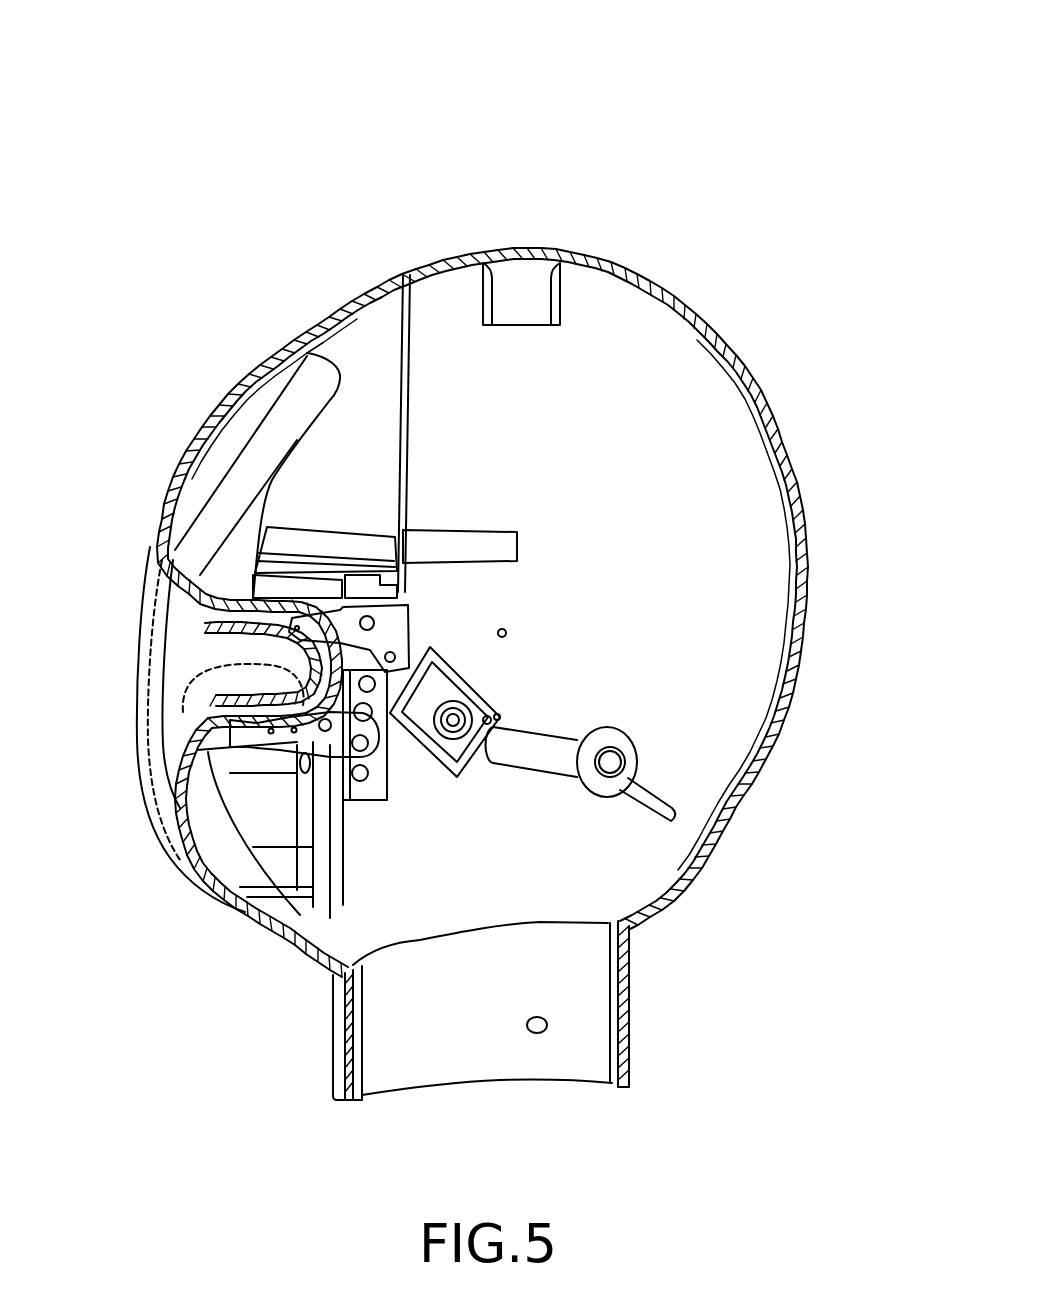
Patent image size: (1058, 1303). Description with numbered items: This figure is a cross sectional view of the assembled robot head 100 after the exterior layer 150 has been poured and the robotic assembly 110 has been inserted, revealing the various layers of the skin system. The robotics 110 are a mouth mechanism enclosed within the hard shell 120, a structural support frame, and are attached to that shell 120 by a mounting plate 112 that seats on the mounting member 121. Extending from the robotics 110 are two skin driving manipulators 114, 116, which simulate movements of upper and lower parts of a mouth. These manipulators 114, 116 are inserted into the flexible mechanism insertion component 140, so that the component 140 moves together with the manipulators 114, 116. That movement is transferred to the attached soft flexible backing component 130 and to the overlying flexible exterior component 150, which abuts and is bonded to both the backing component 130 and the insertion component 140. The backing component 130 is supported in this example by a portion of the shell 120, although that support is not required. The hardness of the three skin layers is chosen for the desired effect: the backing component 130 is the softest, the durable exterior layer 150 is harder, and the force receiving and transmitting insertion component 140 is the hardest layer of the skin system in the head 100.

The robot head 100 is at (703, 162).
The robotic assembly 110 is at (448, 818).
The mounting plate 112 is at (343, 803).
The manipulator 114 is at (274, 748).
The manipulator 116 is at (410, 608).
The hard shell 120 is at (613, 431).
The mounting member 121 is at (333, 904).
The backing component 130 is at (260, 428).
The mechanism insertion component 140 is at (204, 742).
The exterior layer 150 is at (153, 587).